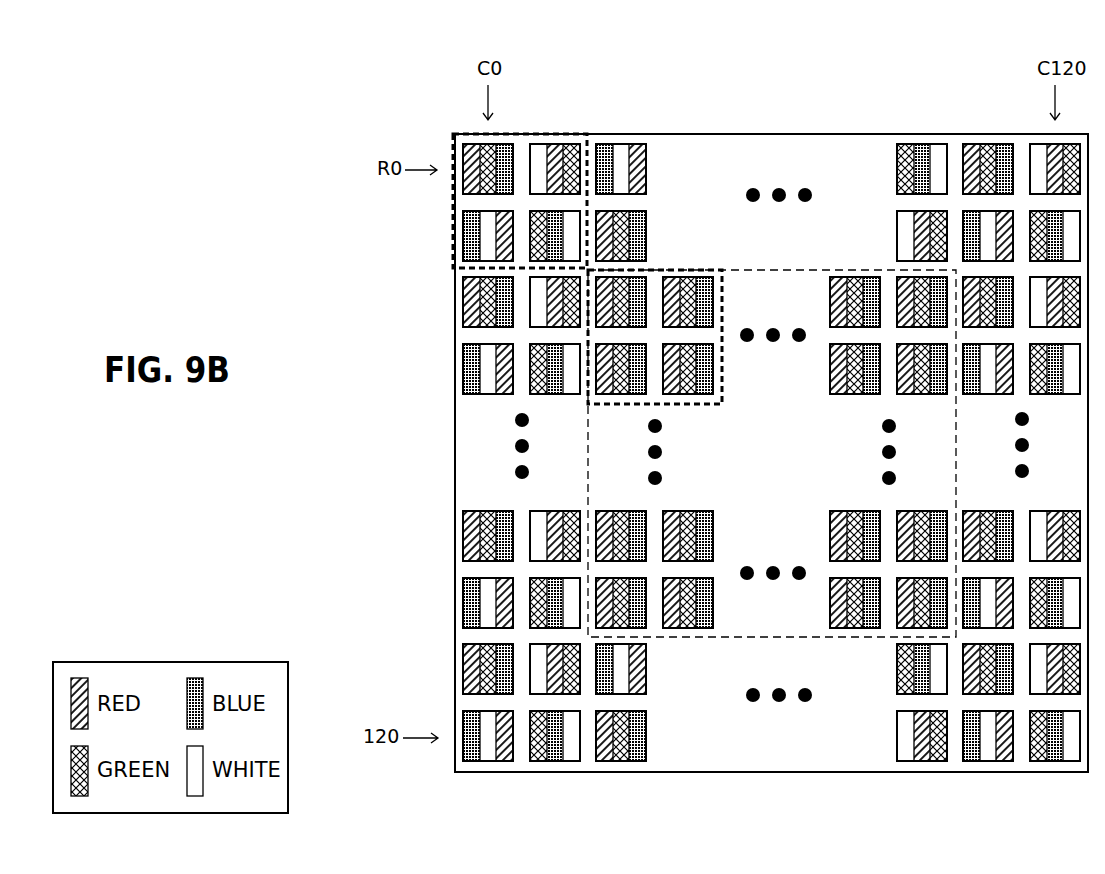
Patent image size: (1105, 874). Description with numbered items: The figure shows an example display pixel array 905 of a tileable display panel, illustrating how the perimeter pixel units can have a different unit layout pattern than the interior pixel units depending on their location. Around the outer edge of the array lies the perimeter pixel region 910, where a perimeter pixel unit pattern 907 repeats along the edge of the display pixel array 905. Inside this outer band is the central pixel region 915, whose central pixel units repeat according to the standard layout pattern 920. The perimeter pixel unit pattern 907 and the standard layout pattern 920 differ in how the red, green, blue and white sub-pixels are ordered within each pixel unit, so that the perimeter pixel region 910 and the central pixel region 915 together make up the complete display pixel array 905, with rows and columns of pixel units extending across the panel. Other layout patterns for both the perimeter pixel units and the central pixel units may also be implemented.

The display pixel array 905 is at (344, 54).
The perimeter pixel unit pattern 907 is at (576, 133).
The perimeter pixel region 910 is at (774, 452).
The central pixel region 915 is at (772, 453).
The standard layout pattern 920 is at (723, 371).